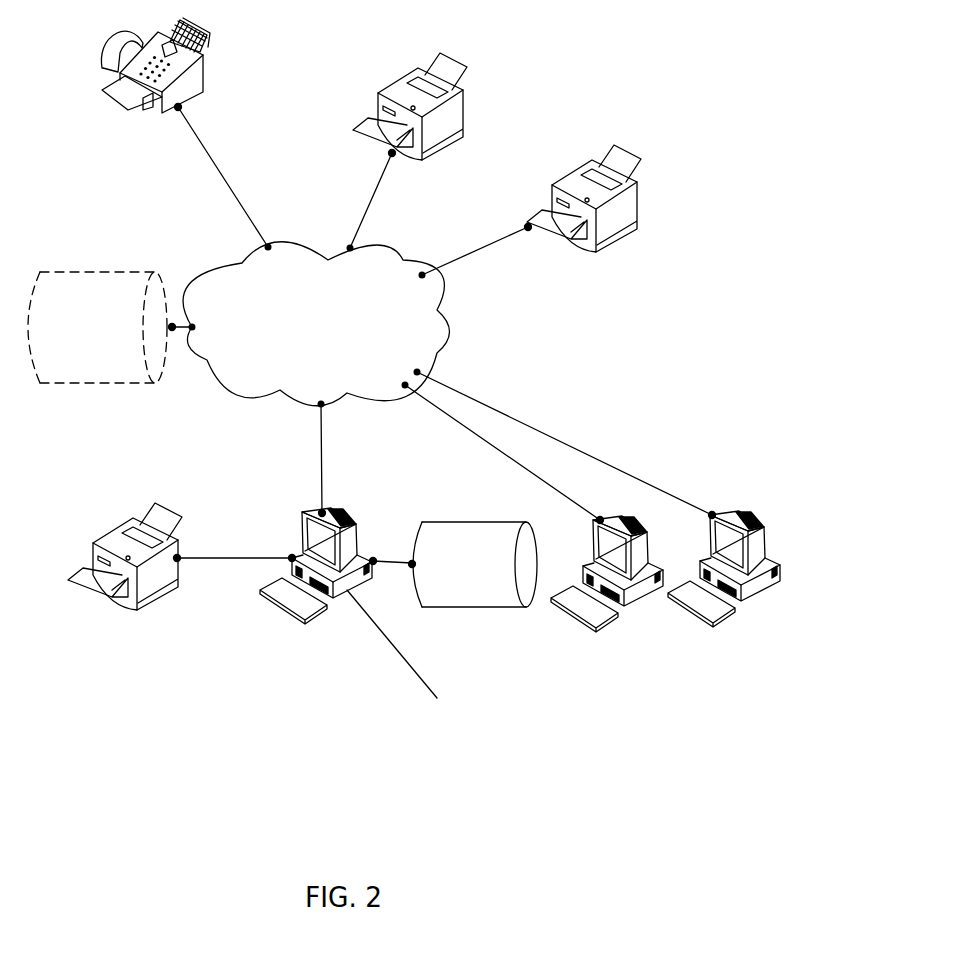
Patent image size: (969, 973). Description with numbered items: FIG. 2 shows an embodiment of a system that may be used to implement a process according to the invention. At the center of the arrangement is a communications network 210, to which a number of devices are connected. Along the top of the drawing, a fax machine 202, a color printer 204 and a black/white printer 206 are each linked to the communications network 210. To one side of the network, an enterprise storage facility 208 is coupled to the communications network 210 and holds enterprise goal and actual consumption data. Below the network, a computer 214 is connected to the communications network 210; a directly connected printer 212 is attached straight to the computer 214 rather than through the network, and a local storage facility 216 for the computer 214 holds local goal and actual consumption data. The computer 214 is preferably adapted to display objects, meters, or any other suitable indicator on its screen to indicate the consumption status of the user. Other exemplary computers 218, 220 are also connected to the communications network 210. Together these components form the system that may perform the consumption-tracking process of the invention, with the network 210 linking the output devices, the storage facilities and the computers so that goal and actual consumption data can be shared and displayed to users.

The fax machine 202 is at (208, 70).
The color printer 204 is at (465, 115).
The black/white printer 206 is at (638, 205).
The enterprise storage facility 208 is at (153, 273).
The communications network 210 is at (450, 325).
The directly connected printer 212 is at (178, 540).
The computer 214 is at (357, 524).
The local storage facility 216 is at (530, 522).
The computer 218 is at (637, 605).
The computer 220 is at (782, 568).